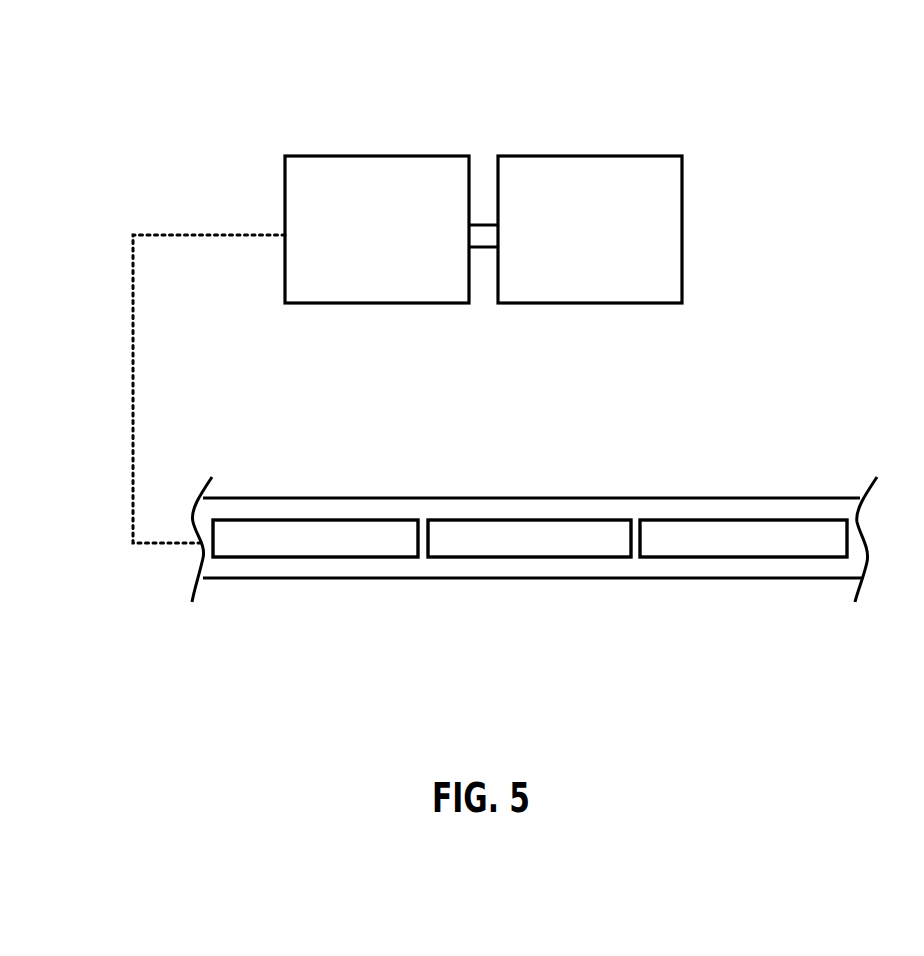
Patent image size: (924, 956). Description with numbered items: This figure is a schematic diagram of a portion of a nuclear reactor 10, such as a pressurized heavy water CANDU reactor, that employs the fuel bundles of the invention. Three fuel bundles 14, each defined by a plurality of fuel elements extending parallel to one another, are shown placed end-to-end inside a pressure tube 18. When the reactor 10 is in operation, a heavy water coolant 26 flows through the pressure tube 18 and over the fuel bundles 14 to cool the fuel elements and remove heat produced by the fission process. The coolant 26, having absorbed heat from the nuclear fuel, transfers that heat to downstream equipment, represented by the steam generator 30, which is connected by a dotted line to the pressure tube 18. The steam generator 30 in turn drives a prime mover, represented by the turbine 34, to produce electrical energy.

The reactor 10 is at (807, 163).
The fuel bundles 14 is at (275, 558).
The pressure tube 18 is at (268, 497).
The heavy water coolant 26 is at (697, 512).
The steam generator 30 is at (353, 154).
The turbine 34 is at (558, 154).